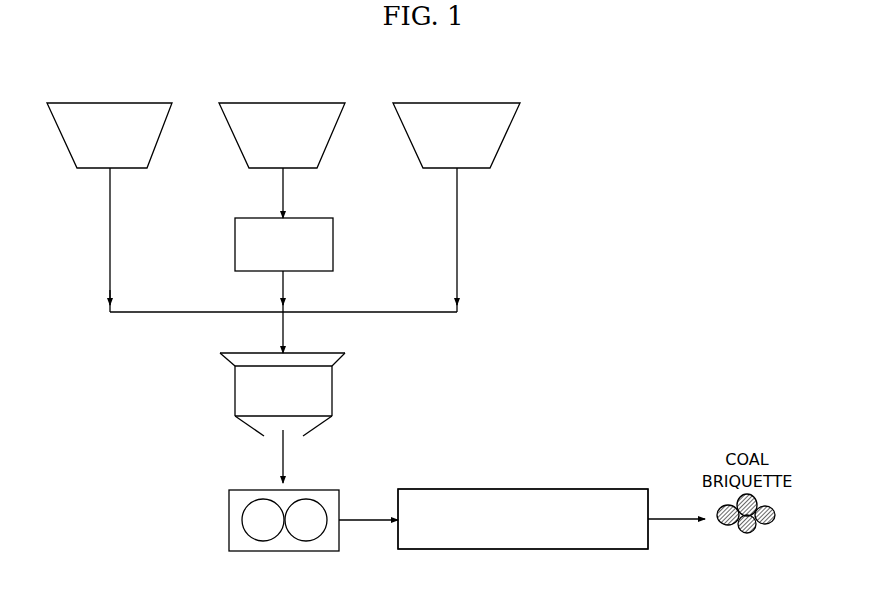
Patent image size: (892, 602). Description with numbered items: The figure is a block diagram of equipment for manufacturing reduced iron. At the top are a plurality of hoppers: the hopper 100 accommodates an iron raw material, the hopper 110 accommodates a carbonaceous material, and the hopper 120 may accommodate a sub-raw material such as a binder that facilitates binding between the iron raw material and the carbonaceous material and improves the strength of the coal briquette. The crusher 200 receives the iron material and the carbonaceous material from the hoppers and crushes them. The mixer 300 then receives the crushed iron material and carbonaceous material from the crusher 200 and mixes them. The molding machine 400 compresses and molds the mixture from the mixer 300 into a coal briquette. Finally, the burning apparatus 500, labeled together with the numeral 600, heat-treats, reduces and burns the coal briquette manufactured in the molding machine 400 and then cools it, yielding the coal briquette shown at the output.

The hopper 100 is at (115, 102).
The hopper 110 is at (308, 102).
The hopper 120 is at (458, 101).
The crusher 200 is at (310, 215).
The mixer 300 is at (310, 352).
The molding machine 400 is at (308, 488).
The burning apparatus 500 is at (525, 488).
The curing unit 600 is at (523, 519).